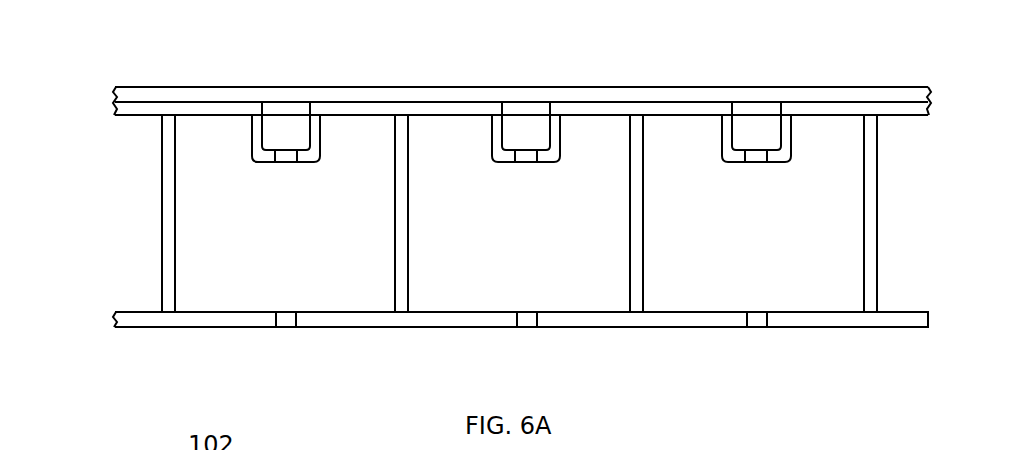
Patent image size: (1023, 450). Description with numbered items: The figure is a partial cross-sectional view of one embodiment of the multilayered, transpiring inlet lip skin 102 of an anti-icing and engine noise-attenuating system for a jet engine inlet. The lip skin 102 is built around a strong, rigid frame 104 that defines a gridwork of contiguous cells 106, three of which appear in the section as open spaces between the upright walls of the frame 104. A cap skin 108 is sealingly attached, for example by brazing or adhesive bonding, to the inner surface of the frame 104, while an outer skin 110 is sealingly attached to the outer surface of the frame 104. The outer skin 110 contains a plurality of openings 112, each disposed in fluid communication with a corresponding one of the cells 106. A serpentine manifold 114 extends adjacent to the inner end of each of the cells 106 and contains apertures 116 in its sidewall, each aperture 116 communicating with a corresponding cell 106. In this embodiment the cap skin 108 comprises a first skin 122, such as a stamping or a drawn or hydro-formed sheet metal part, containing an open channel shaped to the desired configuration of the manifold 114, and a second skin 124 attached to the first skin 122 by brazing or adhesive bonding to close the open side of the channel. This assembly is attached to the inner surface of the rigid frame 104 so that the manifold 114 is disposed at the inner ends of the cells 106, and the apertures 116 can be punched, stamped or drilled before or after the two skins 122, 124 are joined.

The inlet lip skin 102 is at (103, 327).
The rigid frame 104 is at (176, 231).
The cells 106 is at (335, 243).
The cap skin 108 is at (932, 87).
The outer skin 110 is at (188, 318).
The openings 112 is at (295, 315).
The serpentine manifold 114 is at (290, 105).
The apertures 116 is at (295, 153).
The first skin 122 is at (353, 108).
The second skin 124 is at (433, 95).